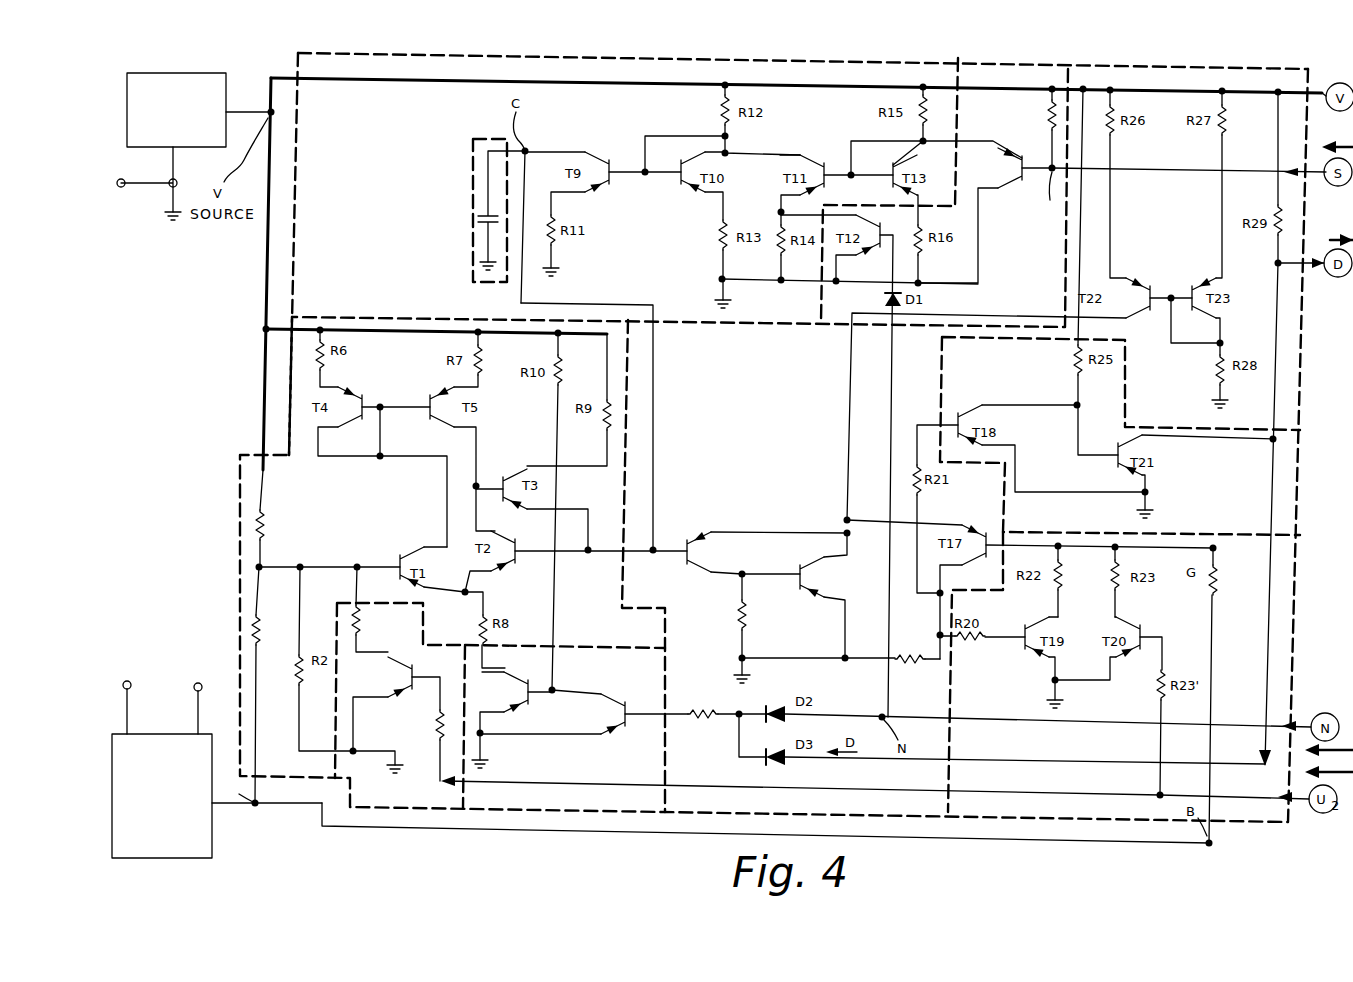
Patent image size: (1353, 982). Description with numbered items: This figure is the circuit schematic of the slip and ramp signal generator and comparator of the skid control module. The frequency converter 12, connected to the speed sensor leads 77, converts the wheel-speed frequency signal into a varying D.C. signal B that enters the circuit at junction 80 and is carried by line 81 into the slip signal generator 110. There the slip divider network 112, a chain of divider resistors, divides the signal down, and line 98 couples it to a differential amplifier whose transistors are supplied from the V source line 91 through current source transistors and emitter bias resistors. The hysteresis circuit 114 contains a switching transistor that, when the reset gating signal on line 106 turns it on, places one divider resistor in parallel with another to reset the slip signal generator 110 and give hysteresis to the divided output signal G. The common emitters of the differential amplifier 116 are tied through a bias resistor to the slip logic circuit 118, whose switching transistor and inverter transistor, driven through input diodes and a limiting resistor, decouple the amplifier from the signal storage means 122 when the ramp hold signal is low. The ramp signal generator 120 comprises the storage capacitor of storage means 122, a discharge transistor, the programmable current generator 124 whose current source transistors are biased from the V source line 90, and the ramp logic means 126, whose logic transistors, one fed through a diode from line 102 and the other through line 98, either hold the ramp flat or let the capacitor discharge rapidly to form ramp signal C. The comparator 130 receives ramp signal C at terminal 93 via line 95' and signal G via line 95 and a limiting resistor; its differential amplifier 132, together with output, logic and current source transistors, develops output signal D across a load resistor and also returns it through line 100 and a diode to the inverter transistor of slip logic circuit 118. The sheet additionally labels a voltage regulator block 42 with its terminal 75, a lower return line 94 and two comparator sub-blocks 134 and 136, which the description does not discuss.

The frequency converter 12 is at (170, 740).
The voltage regulator 42 is at (183, 146).
The ground terminal 75 is at (123, 180).
The speed sensor terminals 77 is at (194, 688).
The junction B 80 is at (258, 802).
The line 81 is at (258, 698).
The V source line 90 is at (430, 81).
The V source line 91 is at (368, 333).
The terminal 93 is at (655, 549).
The ground return line 94 is at (438, 840).
The line 95 is at (1229, 695).
The line 95' is at (637, 426).
The line 98 is at (1148, 170).
The line 100 is at (982, 762).
The line 102 is at (1085, 722).
The line 106 is at (1050, 792).
The slip signal generator 110 is at (597, 804).
The slip divider network 112 is at (300, 774).
The hysteresis circuit 114 is at (400, 749).
The differential amplifier 116 is at (630, 639).
The slip logic circuit 118 is at (638, 684).
The ramp signal generator 120 is at (625, 80).
The signal storage means 122 is at (472, 166).
The programmable current generator 124 is at (917, 87).
The ramp logic means 126 is at (1043, 92).
The comparator 130 is at (758, 566).
The differential amplifier 132 is at (784, 453).
The comparator transistor stage 134 is at (1254, 480).
The comparator output stage 136 is at (1262, 561).